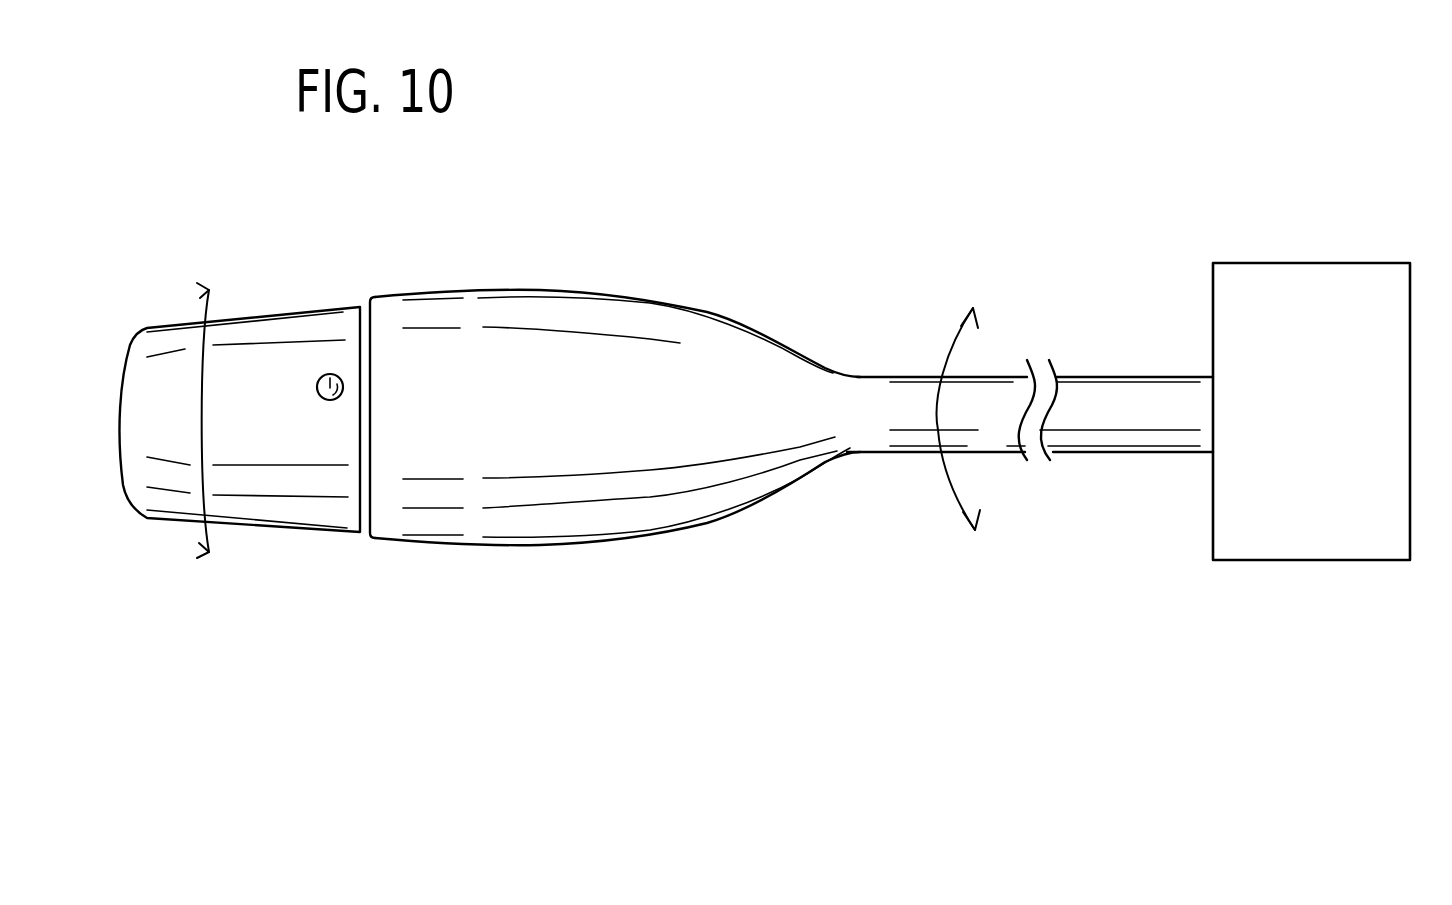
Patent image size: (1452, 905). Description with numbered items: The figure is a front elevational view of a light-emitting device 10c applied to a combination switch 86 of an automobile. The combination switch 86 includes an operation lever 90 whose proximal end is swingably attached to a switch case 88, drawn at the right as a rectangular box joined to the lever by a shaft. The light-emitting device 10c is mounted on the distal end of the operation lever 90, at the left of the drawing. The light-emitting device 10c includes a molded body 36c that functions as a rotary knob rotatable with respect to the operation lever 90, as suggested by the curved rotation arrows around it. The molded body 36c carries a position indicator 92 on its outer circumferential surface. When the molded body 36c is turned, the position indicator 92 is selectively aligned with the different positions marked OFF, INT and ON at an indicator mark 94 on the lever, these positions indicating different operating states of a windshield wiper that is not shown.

The combination switch 86 is at (885, 172).
The switch case 88 is at (1275, 263).
The operation lever 90 is at (710, 337).
The position indicator 92 is at (330, 375).
The indicator mark 94 is at (443, 333).
The molded body 36c is at (273, 508).
The light-emitting device 10c is at (322, 537).